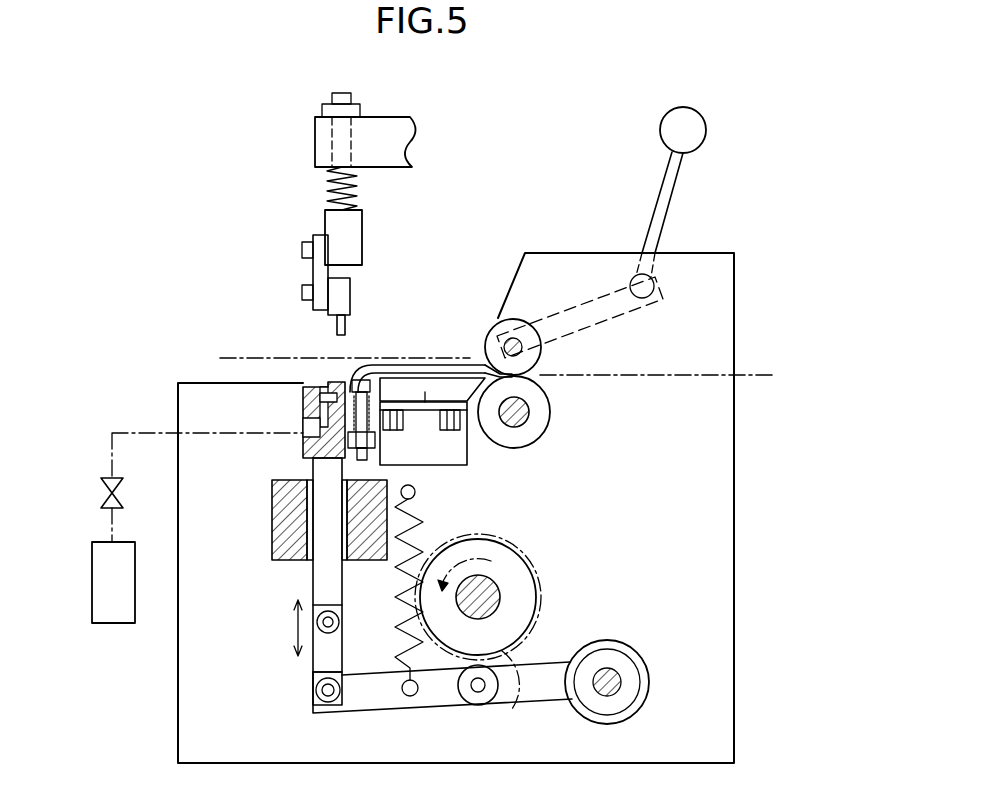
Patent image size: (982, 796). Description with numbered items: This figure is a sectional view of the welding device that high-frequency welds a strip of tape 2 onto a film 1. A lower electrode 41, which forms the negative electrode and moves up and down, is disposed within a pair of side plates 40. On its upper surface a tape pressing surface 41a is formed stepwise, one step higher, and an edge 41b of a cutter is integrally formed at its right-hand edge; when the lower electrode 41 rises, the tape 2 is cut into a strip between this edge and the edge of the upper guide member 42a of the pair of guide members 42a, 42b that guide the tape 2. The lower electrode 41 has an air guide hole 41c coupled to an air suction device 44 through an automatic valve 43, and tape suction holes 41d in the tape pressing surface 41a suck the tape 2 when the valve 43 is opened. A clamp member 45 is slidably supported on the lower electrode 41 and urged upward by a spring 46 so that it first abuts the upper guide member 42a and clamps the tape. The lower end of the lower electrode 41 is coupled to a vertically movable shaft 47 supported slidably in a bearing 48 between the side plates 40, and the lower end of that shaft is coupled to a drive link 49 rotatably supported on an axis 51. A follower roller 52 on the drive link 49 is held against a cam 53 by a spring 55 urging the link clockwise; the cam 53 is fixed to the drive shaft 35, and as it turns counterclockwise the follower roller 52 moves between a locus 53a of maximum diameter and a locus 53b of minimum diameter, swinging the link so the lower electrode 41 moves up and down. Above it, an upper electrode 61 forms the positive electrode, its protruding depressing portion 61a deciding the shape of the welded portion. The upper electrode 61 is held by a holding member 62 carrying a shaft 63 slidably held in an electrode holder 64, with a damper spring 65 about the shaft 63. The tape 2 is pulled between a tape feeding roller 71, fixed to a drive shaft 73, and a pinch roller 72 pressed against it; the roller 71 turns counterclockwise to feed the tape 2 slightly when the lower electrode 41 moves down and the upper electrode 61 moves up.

The film 1 is at (237, 353).
The tape 2 is at (641, 375).
The drive shaft 35 is at (495, 605).
The side plate 40 is at (722, 494).
The lower electrode 41 is at (303, 410).
The tape pressing surface 41a is at (314, 385).
The edge of cutter 41b is at (359, 380).
The air guide hole 41c is at (305, 428).
The tape suction holes 41d is at (330, 387).
The upper guide member 42a is at (470, 364).
The lower guide member 42b is at (425, 393).
The automatic valve 43 is at (118, 486).
The air suction device 44 is at (130, 615).
The clamp member 45 is at (392, 367).
The spring 46 is at (413, 410).
The vertically movable shaft 47 is at (322, 587).
The bearing 48 is at (285, 535).
The drive link 49 is at (383, 695).
The axis 51 is at (607, 697).
The follower roller 52 is at (474, 705).
The cam 53 is at (500, 556).
The locus of maximum diameter 53a is at (533, 562).
The locus of minimum diameter 53b is at (518, 700).
The spring 55 is at (398, 592).
The upper electrode 61 is at (343, 292).
The depressing portion 61a is at (338, 322).
The holding member 62 is at (361, 222).
The shaft 63 is at (328, 150).
The electrode holder 64 is at (424, 147).
The damper spring 65 is at (326, 186).
The tape feeding roller 71 is at (540, 403).
The pinch roller 72 is at (505, 319).
The drive shaft 73 is at (522, 418).